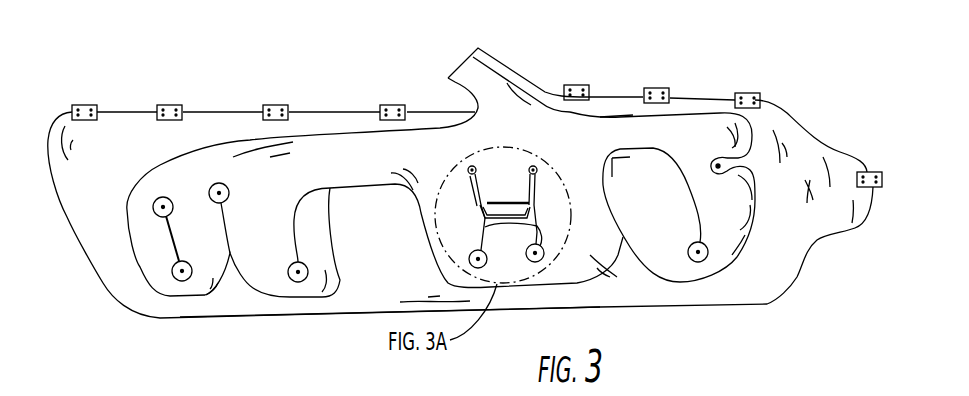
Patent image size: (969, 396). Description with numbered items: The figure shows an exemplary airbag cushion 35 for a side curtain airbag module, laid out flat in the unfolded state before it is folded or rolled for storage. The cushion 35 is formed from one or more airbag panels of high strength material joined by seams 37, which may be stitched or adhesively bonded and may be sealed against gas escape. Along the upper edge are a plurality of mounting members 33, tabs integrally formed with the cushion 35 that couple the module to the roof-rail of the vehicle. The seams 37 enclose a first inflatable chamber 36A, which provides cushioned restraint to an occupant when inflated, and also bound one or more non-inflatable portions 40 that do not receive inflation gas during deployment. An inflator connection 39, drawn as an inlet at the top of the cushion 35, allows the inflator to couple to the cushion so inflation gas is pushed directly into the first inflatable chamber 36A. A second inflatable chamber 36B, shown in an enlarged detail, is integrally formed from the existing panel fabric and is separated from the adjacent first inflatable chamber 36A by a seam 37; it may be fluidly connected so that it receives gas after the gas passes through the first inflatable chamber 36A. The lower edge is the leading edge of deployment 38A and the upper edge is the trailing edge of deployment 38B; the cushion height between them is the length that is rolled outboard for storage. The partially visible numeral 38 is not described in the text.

The mounting members 33 is at (278, 106).
The airbag cushion 35 is at (197, 60).
The first inflatable chamber 36A is at (275, 216).
The second inflatable chamber 36B is at (492, 205).
The seams 37 is at (160, 166).
The panel 38 is at (238, 391).
The leading edge of deployment 38A is at (620, 310).
The trailing edge of deployment 38B is at (713, 98).
The inflator connection 39 is at (478, 72).
The non-inflatable portions 40 is at (100, 257).